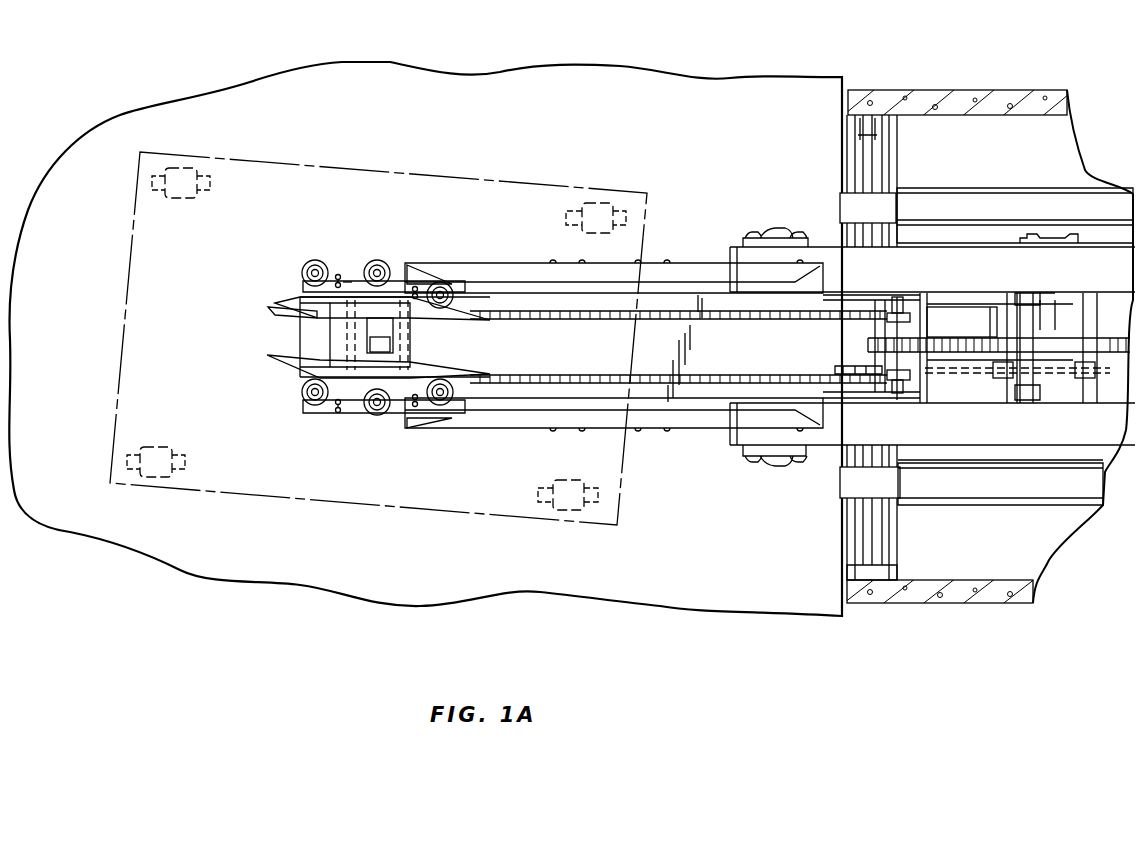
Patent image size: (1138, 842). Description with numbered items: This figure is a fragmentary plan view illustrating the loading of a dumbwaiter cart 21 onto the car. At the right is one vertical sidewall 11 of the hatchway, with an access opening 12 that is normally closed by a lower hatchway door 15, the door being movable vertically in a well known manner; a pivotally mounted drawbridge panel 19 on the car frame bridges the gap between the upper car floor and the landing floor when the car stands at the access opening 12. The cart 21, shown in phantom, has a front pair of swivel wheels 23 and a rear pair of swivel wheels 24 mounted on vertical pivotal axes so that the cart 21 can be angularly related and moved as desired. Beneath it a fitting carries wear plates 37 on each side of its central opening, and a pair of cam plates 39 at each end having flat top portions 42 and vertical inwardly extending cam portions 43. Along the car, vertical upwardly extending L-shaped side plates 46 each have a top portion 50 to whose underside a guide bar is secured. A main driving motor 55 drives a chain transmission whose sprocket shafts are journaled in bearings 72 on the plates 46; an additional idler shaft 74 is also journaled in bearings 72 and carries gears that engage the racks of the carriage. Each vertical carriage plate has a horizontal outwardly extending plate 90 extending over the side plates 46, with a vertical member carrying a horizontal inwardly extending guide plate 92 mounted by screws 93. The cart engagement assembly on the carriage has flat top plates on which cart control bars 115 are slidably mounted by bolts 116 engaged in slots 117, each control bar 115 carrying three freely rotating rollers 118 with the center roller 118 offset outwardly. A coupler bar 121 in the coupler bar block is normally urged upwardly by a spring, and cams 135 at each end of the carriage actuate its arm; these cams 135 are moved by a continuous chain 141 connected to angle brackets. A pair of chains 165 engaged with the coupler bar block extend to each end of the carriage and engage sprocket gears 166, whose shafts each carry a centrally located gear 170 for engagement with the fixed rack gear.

The vertical sidewall 11 is at (1024, 146).
The access opening 12 is at (822, 157).
The lower hatchway door 15 is at (875, 155).
The drawbridge panel 19 is at (883, 197).
The dumbwaiter cart 21 is at (372, 163).
The front swivel wheels 23 is at (208, 180).
The rear swivel wheels 24 is at (582, 203).
The wear plate 37 is at (375, 323).
The cam plate 39 is at (275, 303).
The flat top portion 42 is at (298, 297).
The cam portion 43 is at (275, 311).
The L-shaped side plate 46 is at (992, 252).
The top portion 50 is at (1096, 432).
The main driving motor 55 is at (968, 332).
The bearing 72 is at (793, 204).
The idler shaft 74 is at (1060, 303).
The horizontal outwardly extending plate 90 is at (822, 286).
The guide plate 92 is at (528, 277).
The screw 93 is at (648, 265).
The cart control bar 115 is at (385, 264).
The bolt 116 is at (345, 280).
The slot 117 is at (338, 273).
The roller 118 is at (314, 260).
The coupler bar 121 is at (392, 347).
The cam 135 is at (824, 367).
The continuous chain 141 is at (967, 377).
The chain 165 is at (773, 329).
The sprocket gear 166 is at (897, 311).
The gear 170 is at (882, 347).